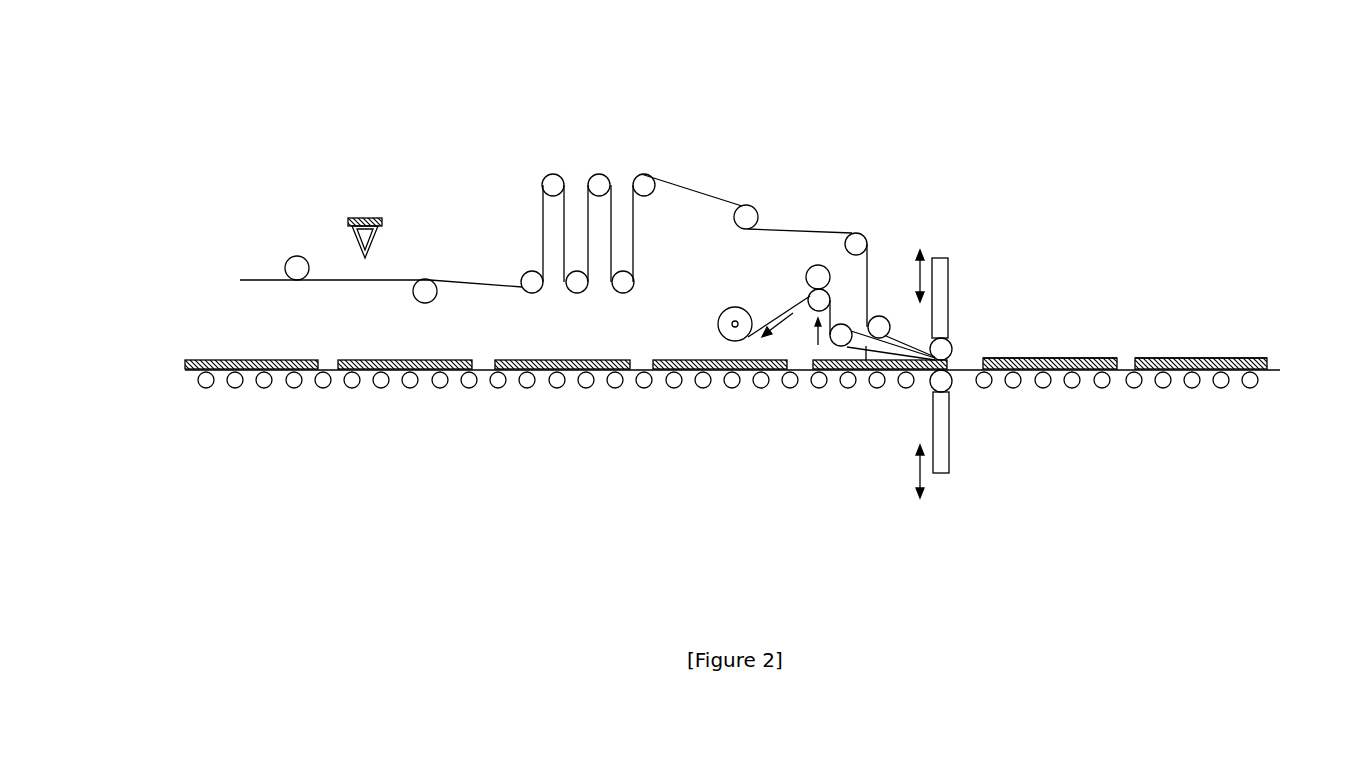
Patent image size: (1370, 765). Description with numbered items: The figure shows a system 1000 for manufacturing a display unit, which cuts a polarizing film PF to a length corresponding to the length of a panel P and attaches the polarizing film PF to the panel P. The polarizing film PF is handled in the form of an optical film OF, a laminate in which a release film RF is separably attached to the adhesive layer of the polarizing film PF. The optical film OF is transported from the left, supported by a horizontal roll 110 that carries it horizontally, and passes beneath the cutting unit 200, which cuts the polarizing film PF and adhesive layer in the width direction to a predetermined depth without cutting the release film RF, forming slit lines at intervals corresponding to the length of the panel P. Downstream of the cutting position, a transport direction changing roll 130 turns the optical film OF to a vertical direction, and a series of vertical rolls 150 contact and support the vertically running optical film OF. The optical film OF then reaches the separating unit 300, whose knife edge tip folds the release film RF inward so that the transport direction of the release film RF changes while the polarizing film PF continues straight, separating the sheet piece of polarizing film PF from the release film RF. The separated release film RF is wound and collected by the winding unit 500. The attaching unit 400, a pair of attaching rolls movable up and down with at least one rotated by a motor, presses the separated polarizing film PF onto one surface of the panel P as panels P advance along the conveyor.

The system for manufacturing a display unit 1000 is at (250, 63).
The cutting unit 200 is at (365, 217).
The horizontal roll 110 is at (418, 303).
The transport direction changing roll 130 is at (527, 272).
The vertical roll 150 is at (556, 176).
The winding unit 500 is at (730, 323).
The separating unit 300 is at (866, 360).
The attaching unit 400 is at (947, 490).
The optical film OF is at (252, 280).
The release film RF is at (783, 303).
The polarizing film PF is at (1250, 358).
The panel P is at (185, 368).